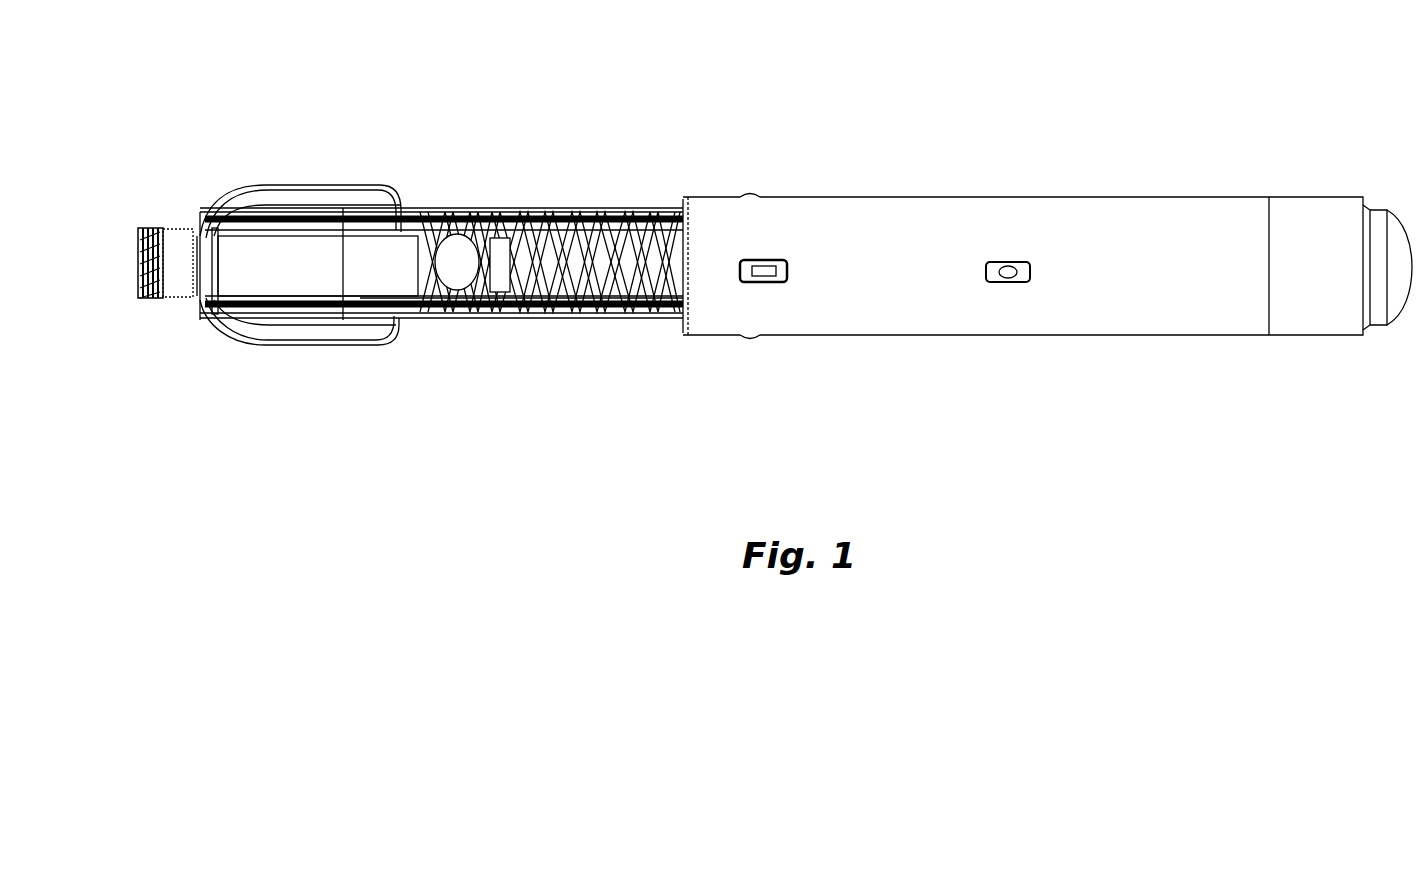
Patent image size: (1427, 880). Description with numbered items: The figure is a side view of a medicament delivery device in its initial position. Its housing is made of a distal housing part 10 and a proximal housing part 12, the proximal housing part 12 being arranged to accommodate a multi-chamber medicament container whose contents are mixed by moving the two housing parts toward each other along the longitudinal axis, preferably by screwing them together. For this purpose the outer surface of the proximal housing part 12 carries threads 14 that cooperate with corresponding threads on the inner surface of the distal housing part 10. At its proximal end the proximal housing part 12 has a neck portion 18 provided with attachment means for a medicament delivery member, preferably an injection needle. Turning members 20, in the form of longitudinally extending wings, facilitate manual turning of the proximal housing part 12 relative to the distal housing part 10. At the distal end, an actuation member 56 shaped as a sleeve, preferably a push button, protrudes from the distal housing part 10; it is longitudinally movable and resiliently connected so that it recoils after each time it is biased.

The distal housing part 10 is at (893, 274).
The proximal housing part 12 is at (285, 225).
The threads 14 is at (605, 282).
The neck portion 18 is at (170, 230).
The turning members 20 is at (350, 340).
The actuation member 56 is at (1385, 235).